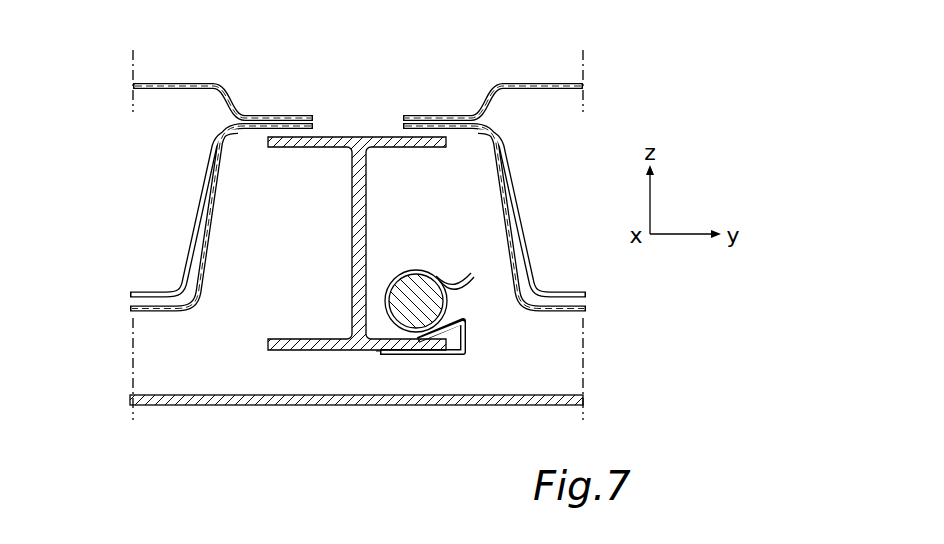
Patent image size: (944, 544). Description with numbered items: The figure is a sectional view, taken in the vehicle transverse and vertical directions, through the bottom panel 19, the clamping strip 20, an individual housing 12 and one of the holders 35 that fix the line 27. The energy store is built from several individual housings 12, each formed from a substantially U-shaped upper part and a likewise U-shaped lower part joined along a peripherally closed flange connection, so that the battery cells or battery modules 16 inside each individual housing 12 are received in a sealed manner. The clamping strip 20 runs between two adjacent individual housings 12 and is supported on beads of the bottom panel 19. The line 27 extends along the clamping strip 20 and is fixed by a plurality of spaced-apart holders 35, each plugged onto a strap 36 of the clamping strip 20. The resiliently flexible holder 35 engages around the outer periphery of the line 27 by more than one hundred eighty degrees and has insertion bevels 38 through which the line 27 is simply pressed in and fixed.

The individual housing 12 is at (113, 103).
The battery cells or battery modules 16 is at (182, 182).
The bottom panel 19 is at (248, 398).
The clamping strip 20 is at (352, 228).
The line 27 is at (447, 304).
The holder 35 is at (423, 350).
The strap 36 is at (373, 350).
The insertion bevel 38 is at (474, 281).